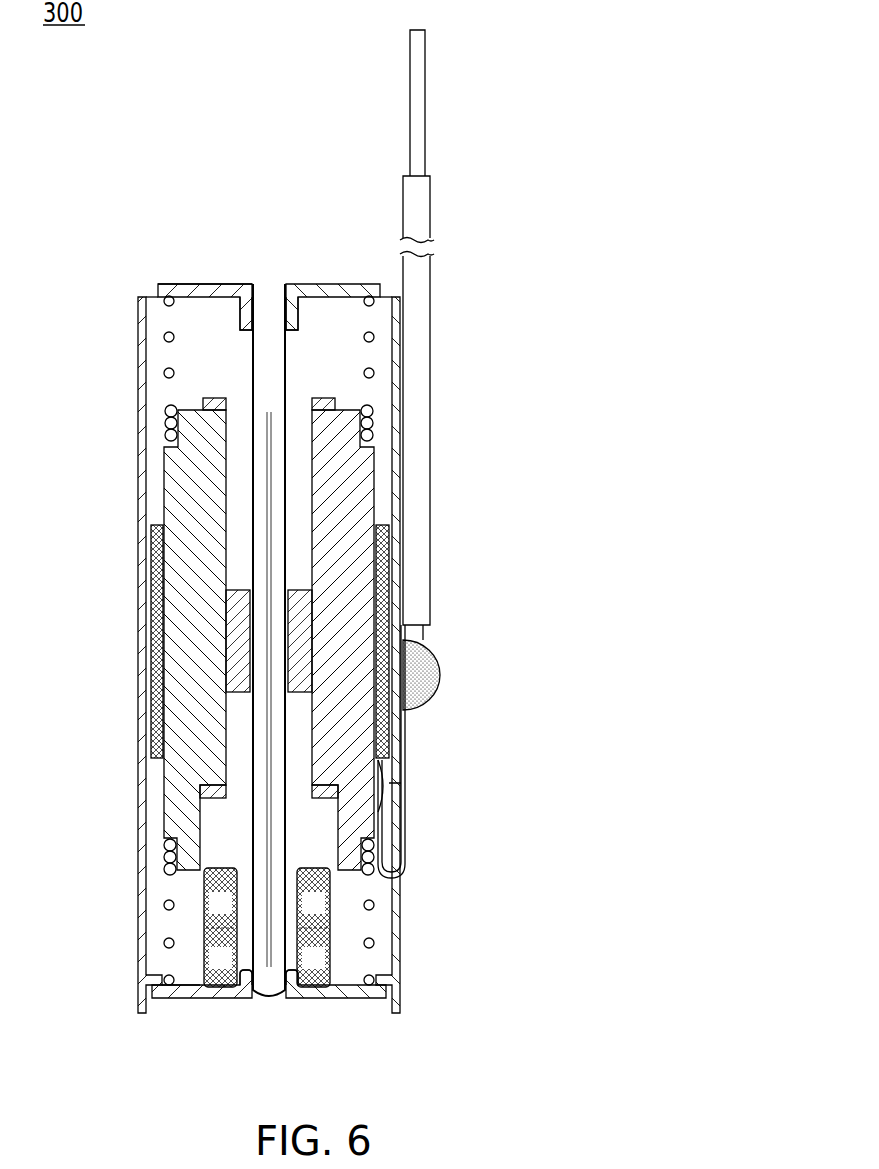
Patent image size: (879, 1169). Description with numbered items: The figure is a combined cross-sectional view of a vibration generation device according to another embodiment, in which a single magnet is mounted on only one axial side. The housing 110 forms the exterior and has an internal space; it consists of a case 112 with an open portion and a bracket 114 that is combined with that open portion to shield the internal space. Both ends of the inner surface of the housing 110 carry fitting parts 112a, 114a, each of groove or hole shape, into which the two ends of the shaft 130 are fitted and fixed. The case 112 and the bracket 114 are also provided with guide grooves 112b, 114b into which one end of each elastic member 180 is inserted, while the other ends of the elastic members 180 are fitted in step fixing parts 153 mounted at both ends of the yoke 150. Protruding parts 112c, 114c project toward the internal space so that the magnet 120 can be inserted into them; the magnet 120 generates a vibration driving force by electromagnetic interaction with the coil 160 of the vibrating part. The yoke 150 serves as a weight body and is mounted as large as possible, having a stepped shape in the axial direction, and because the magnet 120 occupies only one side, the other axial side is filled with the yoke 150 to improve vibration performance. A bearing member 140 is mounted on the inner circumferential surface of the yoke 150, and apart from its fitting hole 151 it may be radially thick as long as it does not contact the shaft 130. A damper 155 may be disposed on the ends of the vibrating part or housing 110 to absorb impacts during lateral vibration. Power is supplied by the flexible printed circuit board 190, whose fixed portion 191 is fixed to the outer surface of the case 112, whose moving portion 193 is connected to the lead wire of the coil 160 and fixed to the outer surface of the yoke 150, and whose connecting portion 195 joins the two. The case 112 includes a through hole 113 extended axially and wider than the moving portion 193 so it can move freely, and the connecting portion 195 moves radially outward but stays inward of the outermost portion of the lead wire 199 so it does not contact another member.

The housing 110 is at (320, 631).
The case 112 is at (317, 586).
The fitting part 112a is at (292, 312).
The guide groove 112b is at (183, 297).
The protruding part 112c is at (247, 322).
The through hole 113 is at (401, 927).
The bracket 114 is at (285, 1029).
The fitting part 114a is at (287, 979).
The guide groove 114b is at (180, 989).
The protruding part 114c is at (258, 986).
The magnet 120 is at (203, 917).
The shaft 130 is at (275, 384).
The bearing member 140 is at (308, 604).
The yoke 150 is at (356, 513).
The fitting hole 151 is at (220, 746).
The step fixing part 153 is at (165, 414).
The damper 155 is at (212, 398).
The coil 160 is at (385, 612).
The elastic member 180 is at (164, 337).
The flexible printed circuit board 190 is at (481, 751).
The fixed portion 191 is at (407, 733).
The moving portion 193 is at (402, 810).
The connecting portion 195 is at (408, 862).
The lead wire 199 is at (423, 277).